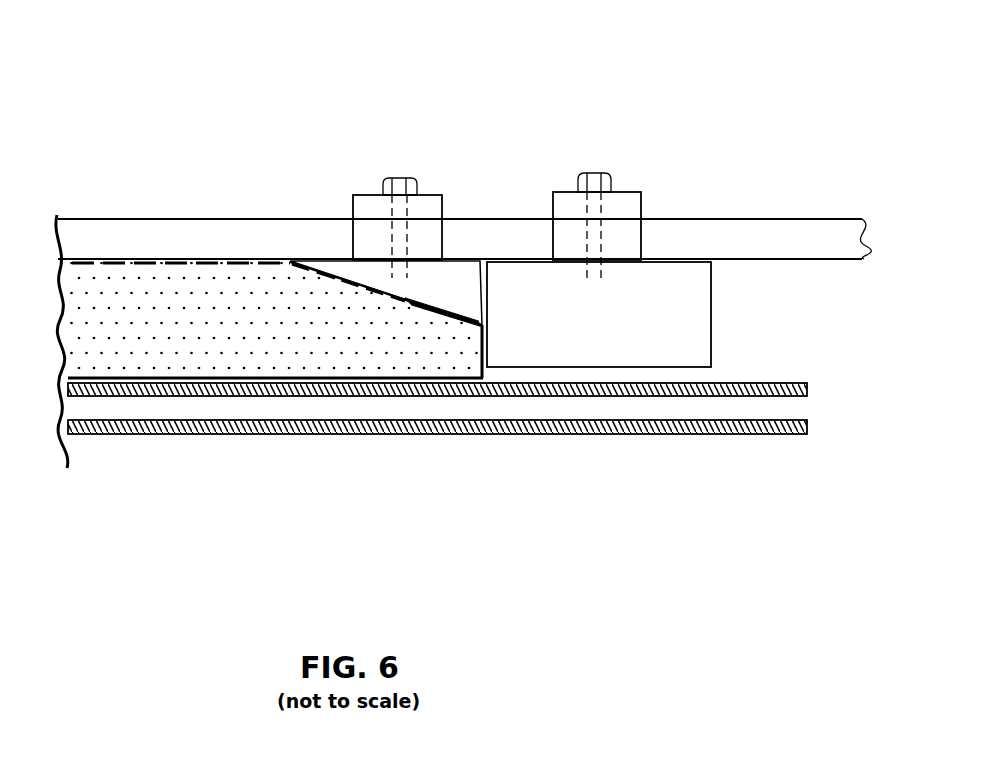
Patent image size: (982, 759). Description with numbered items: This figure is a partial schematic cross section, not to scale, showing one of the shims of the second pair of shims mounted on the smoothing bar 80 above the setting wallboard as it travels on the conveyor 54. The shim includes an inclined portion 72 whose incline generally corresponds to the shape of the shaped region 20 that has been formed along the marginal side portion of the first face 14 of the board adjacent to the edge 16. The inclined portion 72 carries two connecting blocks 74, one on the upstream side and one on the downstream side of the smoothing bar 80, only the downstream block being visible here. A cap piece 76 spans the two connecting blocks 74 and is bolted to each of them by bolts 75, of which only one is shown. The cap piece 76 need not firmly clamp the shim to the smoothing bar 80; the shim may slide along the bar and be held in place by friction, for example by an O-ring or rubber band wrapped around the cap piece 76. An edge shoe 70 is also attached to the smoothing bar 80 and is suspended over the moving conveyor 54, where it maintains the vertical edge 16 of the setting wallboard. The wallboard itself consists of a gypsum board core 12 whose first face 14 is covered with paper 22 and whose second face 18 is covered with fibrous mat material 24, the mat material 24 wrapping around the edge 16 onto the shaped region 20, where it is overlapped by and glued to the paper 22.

The gypsum board core 12 is at (275, 436).
The first face 14 is at (238, 182).
The edge 16 is at (392, 413).
The second face 18 is at (275, 397).
The shaped region 20 is at (352, 296).
The paper 22 is at (195, 257).
The fibrous mat material 24 is at (275, 397).
The conveyor 54 is at (446, 470).
The edge shoe 70 is at (713, 323).
The inclined portion 72 is at (450, 290).
The connecting block 74 is at (446, 232).
The bolt 75 is at (393, 176).
The cap piece 76 is at (422, 147).
The smoothing bar 80 is at (456, 161).